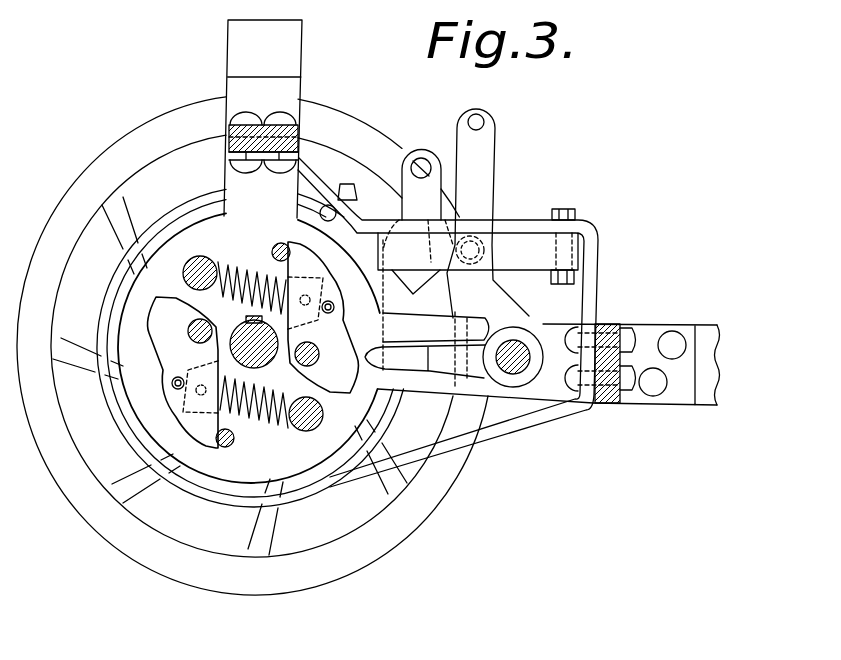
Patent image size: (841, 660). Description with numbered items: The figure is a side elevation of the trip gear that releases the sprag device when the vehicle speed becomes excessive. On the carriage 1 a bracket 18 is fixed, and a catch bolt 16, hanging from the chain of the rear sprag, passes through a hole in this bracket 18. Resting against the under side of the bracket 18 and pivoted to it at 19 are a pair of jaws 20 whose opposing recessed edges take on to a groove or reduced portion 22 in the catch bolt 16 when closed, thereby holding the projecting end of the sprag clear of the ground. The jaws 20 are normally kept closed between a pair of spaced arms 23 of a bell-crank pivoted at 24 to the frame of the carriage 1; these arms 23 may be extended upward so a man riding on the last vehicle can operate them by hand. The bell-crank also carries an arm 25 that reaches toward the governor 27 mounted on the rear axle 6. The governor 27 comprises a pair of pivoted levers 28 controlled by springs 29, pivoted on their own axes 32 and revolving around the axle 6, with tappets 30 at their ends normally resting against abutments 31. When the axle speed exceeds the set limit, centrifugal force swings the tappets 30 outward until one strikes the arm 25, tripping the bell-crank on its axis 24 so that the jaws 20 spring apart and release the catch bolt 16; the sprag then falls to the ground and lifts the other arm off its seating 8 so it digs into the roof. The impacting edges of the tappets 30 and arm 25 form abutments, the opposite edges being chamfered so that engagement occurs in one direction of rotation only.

The carriage 1 is at (652, 333).
The rear axle 6 is at (246, 336).
The seating 8 is at (263, 119).
The catch bolt 16 is at (422, 158).
The bracket 18 is at (512, 224).
The pivot of jaws 19 is at (564, 208).
The jaws 20 is at (528, 262).
The groove or reduced portion 22 is at (411, 305).
The spaced arms of bell-crank 23 is at (480, 157).
The bell-crank pivot 24 is at (517, 370).
The bell-crank arm 25 is at (479, 357).
The governor 27 is at (269, 343).
The pivoted levers 28 is at (330, 336).
The springs 29 is at (246, 278).
The tappets 30 is at (305, 262).
The abutments 31 is at (279, 243).
The lever axes 32 is at (192, 323).